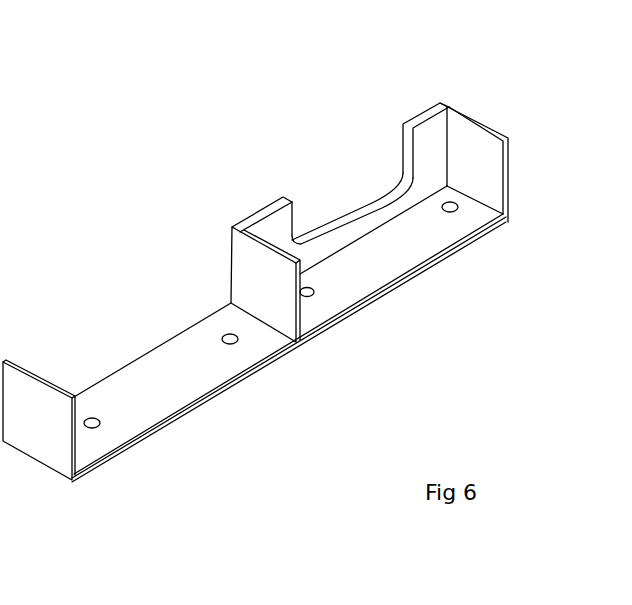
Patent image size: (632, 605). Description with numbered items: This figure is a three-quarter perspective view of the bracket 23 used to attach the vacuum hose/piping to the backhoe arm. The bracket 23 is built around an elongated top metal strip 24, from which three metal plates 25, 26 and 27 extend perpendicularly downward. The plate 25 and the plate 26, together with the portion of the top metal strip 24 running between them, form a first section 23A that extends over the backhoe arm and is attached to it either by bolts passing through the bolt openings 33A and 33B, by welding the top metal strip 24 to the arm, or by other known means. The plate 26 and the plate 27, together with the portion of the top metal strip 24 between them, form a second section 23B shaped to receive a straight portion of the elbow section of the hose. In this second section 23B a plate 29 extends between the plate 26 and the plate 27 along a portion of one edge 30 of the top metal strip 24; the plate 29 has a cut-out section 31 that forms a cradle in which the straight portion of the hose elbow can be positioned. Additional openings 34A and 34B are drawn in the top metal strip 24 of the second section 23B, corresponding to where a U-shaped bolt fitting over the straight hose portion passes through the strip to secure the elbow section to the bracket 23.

The bracket 23 is at (418, 325).
The first section 23A is at (238, 383).
The second section 23B is at (450, 258).
The top metal strip 24 is at (160, 407).
The metal plate 25 is at (27, 372).
The metal plate 26 is at (243, 270).
The metal plate 27 is at (473, 118).
The plate 29 is at (420, 113).
The edge 30 is at (153, 343).
The cut-out section 31 is at (293, 218).
The bolt opening 33A is at (230, 336).
The bolt opening 33B is at (95, 428).
The mounting hole 34A is at (453, 210).
The mounting hole 34B is at (307, 294).